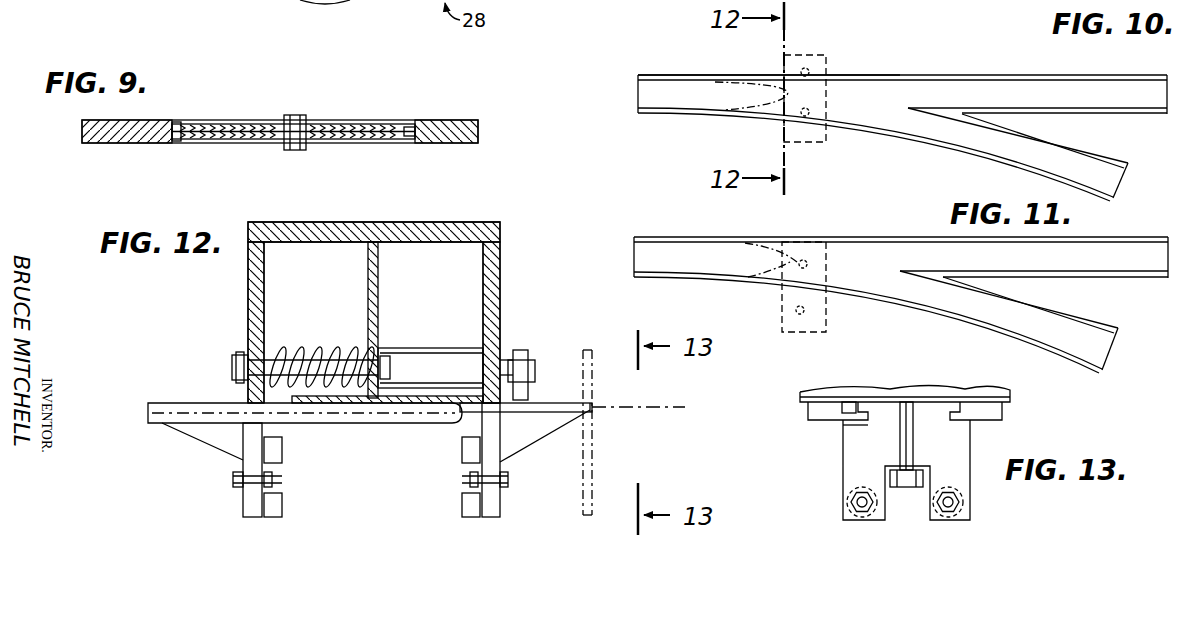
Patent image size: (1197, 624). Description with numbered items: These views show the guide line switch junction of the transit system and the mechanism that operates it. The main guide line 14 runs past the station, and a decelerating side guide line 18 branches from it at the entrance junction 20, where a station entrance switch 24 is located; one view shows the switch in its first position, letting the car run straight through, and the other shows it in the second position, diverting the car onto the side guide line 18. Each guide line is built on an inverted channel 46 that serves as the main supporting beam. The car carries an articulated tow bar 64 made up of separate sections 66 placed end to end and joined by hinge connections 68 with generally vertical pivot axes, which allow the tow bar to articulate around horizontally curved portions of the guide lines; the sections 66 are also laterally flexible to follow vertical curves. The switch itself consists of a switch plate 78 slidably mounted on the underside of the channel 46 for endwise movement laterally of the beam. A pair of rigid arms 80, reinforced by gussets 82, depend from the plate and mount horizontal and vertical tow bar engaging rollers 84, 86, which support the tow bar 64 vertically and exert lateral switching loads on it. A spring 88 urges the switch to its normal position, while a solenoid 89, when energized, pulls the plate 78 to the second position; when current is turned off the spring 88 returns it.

In FIG. 10, the main guide line 14 is at (1160, 72).
In FIG. 11, the main guide line 14 is at (1160, 234).
In FIG. 10, the side guide line 18 is at (1100, 158).
In FIG. 11, the side guide line 18 is at (896, 322).
In FIG. 10, the entrance junction 20 is at (874, 122).
In FIG. 11, the entrance junction 20 is at (891, 280).
In FIG. 10, the station entrance switch 24 is at (675, 72).
In FIG. 12, the station entrance switch 24 is at (248, 355).
In FIG. 12, the inverted channel 46 is at (501, 282).
In FIG. 13, the inverted channel 46 is at (893, 386).
In FIG. 9, the tow bar 64 is at (480, 125).
In FIG. 10, the tow bar 64 is at (718, 90).
In FIG. 11, the tow bar 64 is at (757, 262).
In FIG. 9, the tow bar section 66 is at (118, 146).
In FIG. 9, the hinge connection 68 is at (286, 151).
In FIG. 10, the switch plate 78 is at (826, 63).
In FIG. 11, the switch plate 78 is at (810, 323).
In FIG. 12, the switch plate 78 is at (588, 402).
In FIG. 13, the switch plate 78 is at (915, 404).
In FIG. 12, the rigid arm 80 is at (283, 447).
In FIG. 13, the rigid arm 80 is at (843, 480).
In FIG. 12, the gusset 82 is at (226, 450).
In FIG. 13, the gusset 82 is at (900, 437).
In FIG. 10, the horizontal switch roller 84 is at (806, 68).
In FIG. 11, the horizontal switch roller 84 is at (807, 264).
In FIG. 12, the horizontal switch roller 84 is at (274, 479).
In FIG. 13, the horizontal switch roller 84 is at (902, 488).
In FIG. 12, the vertical tow bar roller 86 is at (283, 507).
In FIG. 13, the vertical tow bar roller 86 is at (848, 503).
In FIG. 12, the spring 88 is at (288, 352).
In FIG. 12, the solenoid 89 is at (440, 350).